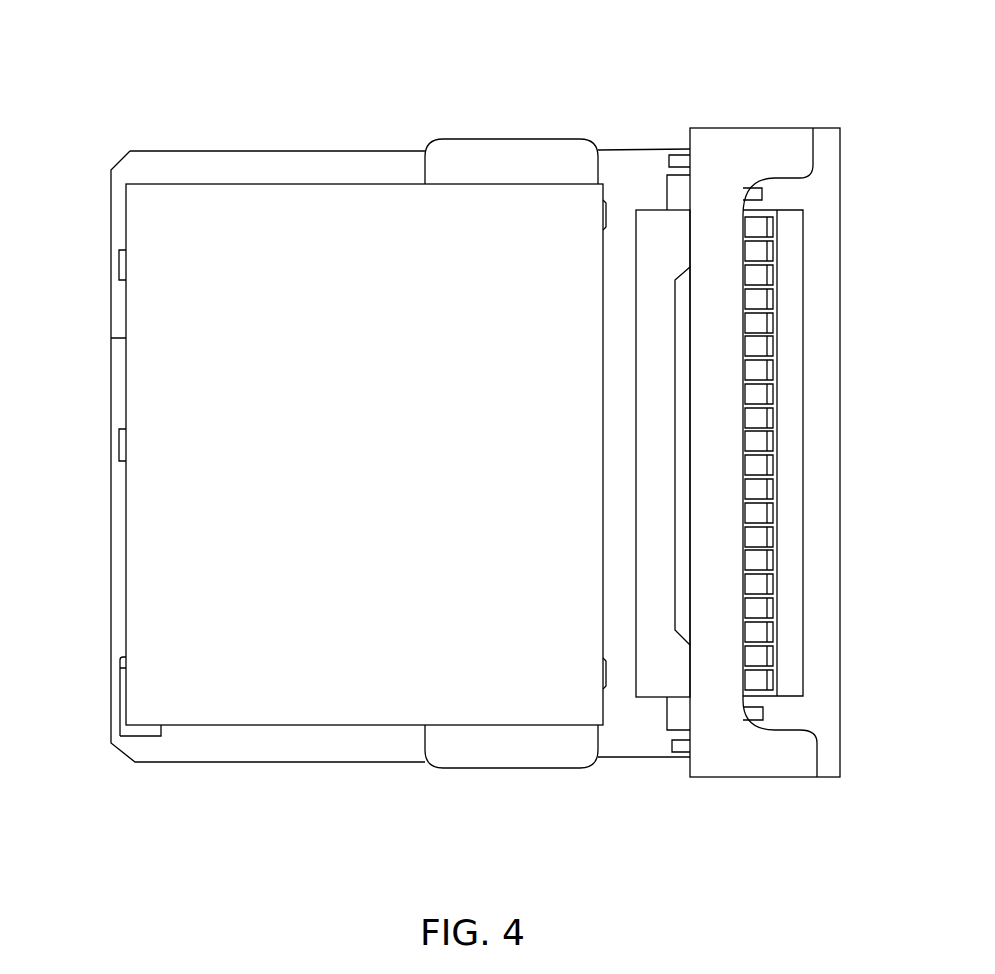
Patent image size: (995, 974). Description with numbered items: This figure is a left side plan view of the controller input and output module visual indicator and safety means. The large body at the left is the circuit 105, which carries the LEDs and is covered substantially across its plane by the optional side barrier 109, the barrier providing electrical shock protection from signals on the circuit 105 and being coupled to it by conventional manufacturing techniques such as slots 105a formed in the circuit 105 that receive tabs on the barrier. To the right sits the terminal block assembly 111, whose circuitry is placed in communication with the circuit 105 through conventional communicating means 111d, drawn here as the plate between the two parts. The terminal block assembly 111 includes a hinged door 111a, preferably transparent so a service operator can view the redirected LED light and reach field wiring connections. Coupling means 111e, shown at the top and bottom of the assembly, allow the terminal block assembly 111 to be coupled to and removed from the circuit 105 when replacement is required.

The circuit 105 is at (302, 150).
The slots 105a is at (165, 262).
The side barrier 109 is at (118, 338).
The terminal block assembly 111 is at (778, 778).
The hinged door 111a is at (823, 182).
The conventional communicating means 111d is at (650, 242).
The coupling means 111e is at (683, 160).